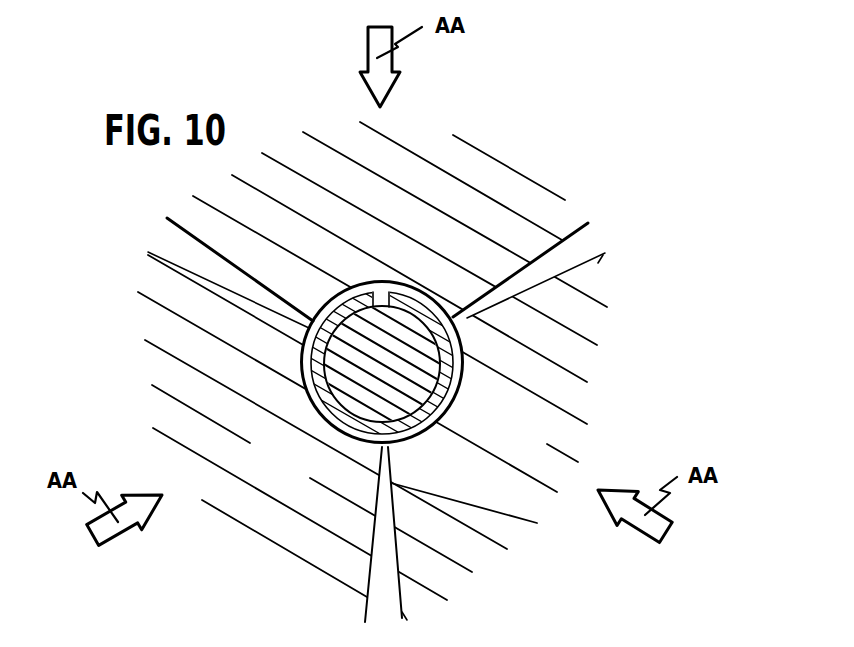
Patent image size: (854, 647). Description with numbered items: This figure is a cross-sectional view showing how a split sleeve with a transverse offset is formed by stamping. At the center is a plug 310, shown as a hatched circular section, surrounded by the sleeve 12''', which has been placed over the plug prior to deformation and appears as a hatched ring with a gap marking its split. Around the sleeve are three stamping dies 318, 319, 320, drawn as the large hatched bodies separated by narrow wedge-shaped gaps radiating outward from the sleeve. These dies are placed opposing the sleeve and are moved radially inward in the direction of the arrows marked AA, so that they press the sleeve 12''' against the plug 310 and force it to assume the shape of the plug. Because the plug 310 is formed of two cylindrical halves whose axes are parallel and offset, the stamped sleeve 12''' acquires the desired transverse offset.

The plug 310 is at (425, 364).
The sleeve 12''' is at (360, 363).
The stamping die 318 is at (400, 269).
The stamping die 319 is at (410, 389).
The stamping die 320 is at (322, 448).